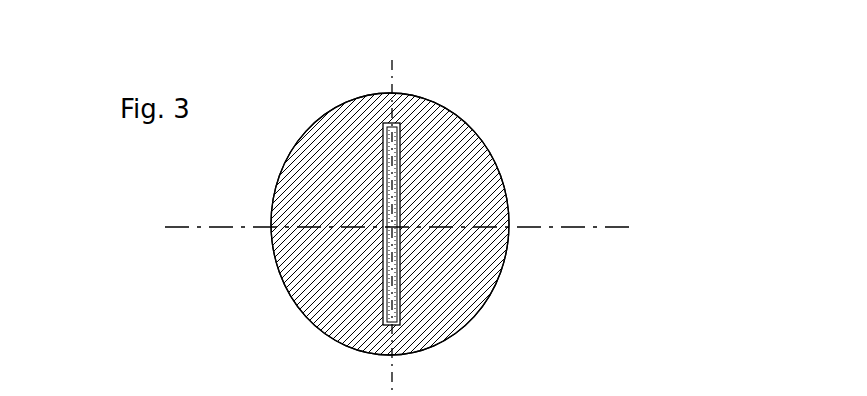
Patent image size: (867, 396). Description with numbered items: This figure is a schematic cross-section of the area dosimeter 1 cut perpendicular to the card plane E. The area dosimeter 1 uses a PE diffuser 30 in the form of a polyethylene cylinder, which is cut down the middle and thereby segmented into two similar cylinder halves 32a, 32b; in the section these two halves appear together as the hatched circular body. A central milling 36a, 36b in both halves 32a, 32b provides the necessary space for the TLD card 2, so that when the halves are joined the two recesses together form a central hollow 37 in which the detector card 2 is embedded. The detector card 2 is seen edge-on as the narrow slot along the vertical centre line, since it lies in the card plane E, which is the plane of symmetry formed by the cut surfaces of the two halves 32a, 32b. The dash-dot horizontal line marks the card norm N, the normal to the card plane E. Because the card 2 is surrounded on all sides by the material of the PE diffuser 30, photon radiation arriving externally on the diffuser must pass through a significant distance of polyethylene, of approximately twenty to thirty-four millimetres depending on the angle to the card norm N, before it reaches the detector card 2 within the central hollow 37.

The area dosimeter 1 is at (598, 261).
The TLD card 2 is at (390, 291).
The PE diffuser 30 is at (497, 162).
The cylinder half 32a is at (277, 180).
The cylinder half 32b is at (508, 190).
The central milling 36a is at (350, 335).
The central milling 36b is at (402, 313).
The central hollow 37 is at (443, 110).
The card plane E is at (393, 62).
The card norm N is at (178, 227).